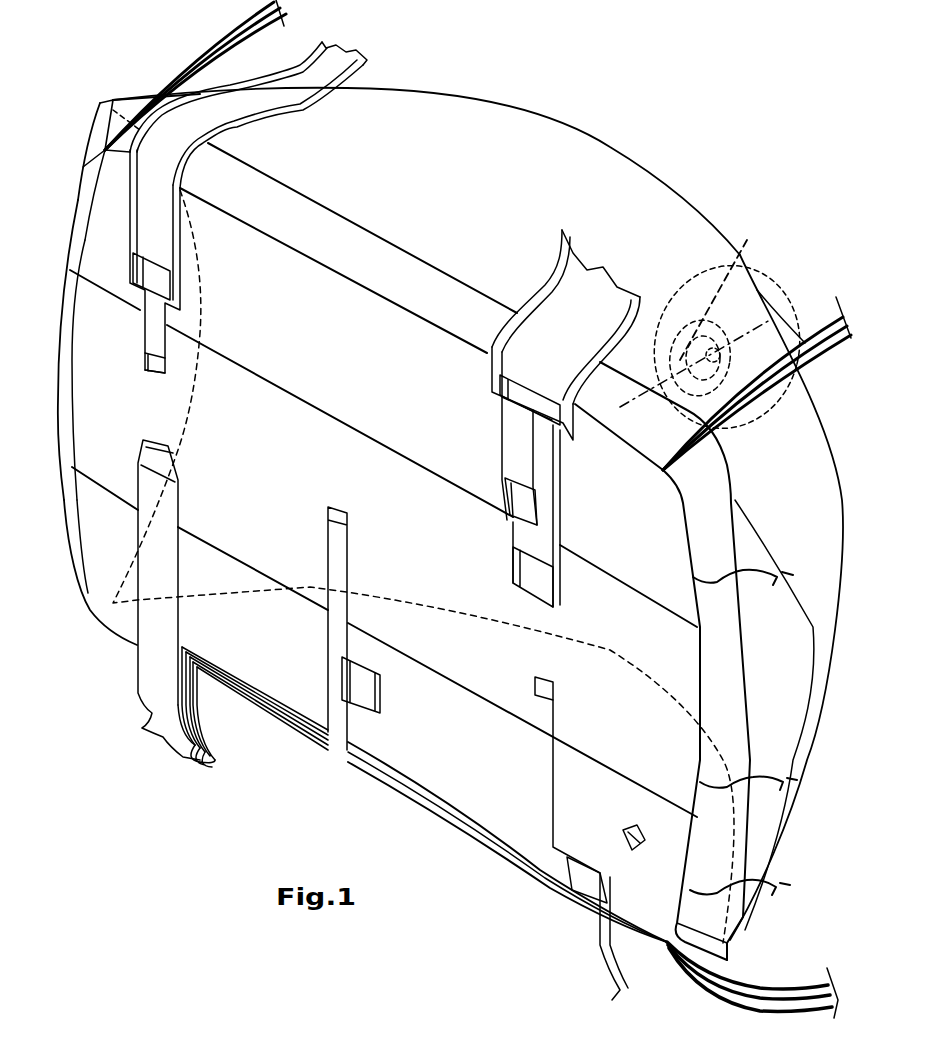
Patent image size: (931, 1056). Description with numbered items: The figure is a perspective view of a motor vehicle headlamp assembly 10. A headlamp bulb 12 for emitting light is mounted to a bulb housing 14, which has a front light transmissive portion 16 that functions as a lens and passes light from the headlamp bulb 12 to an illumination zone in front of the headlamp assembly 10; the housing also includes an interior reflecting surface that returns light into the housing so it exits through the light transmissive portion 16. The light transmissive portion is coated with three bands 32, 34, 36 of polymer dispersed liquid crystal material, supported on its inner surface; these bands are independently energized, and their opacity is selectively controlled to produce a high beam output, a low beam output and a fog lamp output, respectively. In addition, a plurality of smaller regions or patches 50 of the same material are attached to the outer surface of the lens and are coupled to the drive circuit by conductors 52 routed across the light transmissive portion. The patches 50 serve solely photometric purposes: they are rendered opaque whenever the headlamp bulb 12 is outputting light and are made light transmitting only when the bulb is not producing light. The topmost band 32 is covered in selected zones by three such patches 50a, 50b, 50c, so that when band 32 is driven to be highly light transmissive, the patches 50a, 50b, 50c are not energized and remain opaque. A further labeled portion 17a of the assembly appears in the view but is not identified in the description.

The headlamp assembly 10 is at (580, 80).
The headlamp bulb 12 is at (747, 240).
The bulb housing 14 is at (443, 145).
The light transmissive portion 16 is at (730, 700).
The trim cover flap 17a is at (787, 463).
The topmost band 32 is at (102, 218).
The second band 34 is at (97, 350).
The third band 36 is at (103, 540).
The smaller regions or patches 50 is at (157, 377).
The first patch 50a is at (160, 283).
The second patch 50b is at (517, 390).
The third patch 50c is at (520, 497).
The conductors 52 is at (328, 553).